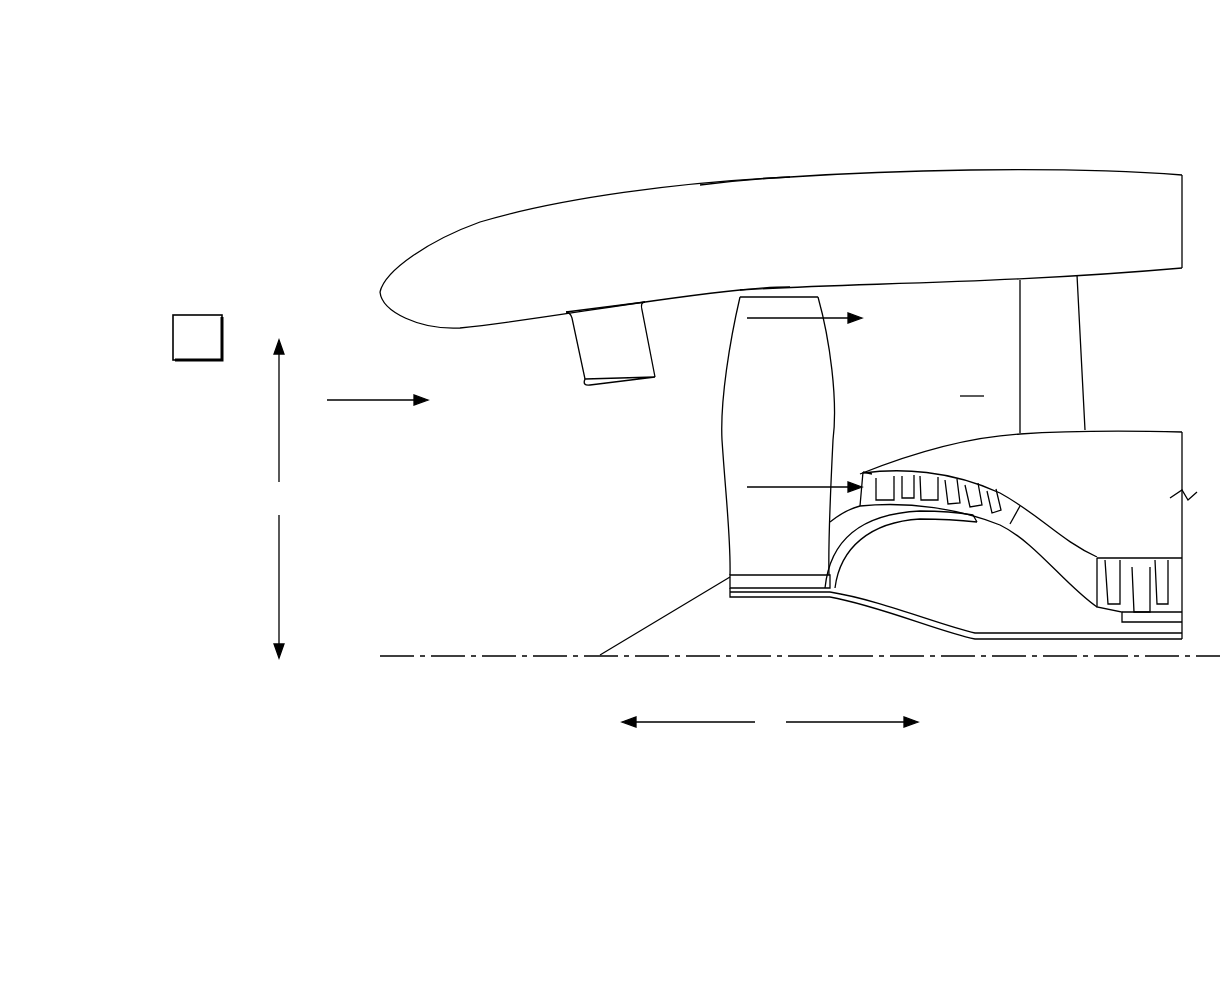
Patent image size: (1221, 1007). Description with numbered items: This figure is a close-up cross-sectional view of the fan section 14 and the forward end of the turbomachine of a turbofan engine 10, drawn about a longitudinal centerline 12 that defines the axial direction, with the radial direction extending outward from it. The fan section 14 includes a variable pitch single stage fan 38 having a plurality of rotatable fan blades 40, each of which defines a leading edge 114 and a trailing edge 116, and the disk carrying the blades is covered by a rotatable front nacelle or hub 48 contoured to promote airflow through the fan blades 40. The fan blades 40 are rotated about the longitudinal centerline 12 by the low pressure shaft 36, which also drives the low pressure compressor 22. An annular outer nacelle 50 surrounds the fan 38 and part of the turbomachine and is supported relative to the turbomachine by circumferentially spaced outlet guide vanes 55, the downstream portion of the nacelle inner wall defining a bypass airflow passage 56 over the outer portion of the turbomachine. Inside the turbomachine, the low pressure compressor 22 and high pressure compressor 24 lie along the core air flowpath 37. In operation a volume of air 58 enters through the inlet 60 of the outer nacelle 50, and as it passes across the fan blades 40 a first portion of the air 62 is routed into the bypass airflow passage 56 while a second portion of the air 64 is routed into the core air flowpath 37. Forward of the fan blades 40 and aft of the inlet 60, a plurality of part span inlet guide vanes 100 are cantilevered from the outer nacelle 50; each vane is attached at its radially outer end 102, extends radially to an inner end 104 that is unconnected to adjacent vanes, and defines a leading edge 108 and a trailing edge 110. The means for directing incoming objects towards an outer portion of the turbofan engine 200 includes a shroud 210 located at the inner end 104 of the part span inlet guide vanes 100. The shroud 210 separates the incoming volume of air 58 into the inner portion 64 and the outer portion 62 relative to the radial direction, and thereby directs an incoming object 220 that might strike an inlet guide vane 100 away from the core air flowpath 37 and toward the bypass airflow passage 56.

The turbofan engine 10 is at (980, 137).
The longitudinal centerline 12 is at (468, 657).
The fan section 14 is at (640, 212).
The low pressure compressor 22 is at (1003, 478).
The high pressure compressor 24 is at (1133, 547).
The low pressure shaft 36 is at (1015, 639).
The core air flowpath 37 is at (1050, 540).
The fan 38 is at (792, 268).
The fan blade 40 is at (796, 447).
The hub 48 is at (620, 638).
The outer nacelle 50 is at (772, 178).
The outlet guide vane 55 is at (1070, 372).
The bypass airflow passage 56 is at (1021, 421).
The volume of air 58 is at (388, 403).
The inlet 60 is at (373, 355).
The first portion of the air 62 is at (775, 322).
The second portion of the air 64 is at (785, 482).
The part span inlet guide vane 100 is at (567, 371).
The outer end 102 is at (623, 295).
The inner end 104 is at (534, 440).
The leading edge 108 is at (553, 378).
The trailing edge 110 is at (662, 360).
The leading edge 114 is at (722, 427).
The trailing edge 116 is at (835, 388).
The means for directing incoming objects towards an outer portion of the turbofan en 200 is at (534, 419).
The shroud 210 is at (534, 419).
The incoming object 220 is at (172, 342).